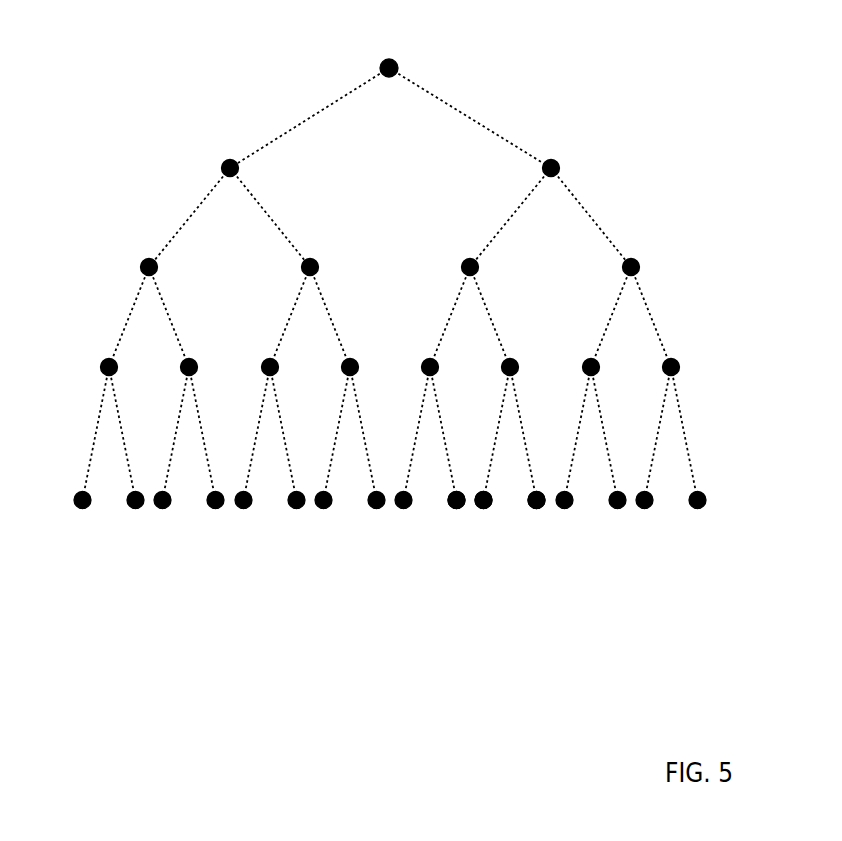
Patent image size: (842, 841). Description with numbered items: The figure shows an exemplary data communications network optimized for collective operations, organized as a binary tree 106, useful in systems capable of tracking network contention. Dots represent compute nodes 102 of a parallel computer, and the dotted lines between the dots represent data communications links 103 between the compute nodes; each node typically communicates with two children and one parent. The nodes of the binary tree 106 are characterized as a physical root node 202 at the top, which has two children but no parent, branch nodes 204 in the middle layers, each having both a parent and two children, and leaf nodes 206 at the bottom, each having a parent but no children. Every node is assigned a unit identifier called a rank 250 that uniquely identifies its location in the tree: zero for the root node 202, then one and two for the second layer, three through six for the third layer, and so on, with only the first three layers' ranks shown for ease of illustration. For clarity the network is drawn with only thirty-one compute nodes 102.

The physical root node 202 is at (415, 55).
The data communications links 103 is at (318, 113).
The rank 250 is at (504, 179).
The branch nodes 204 is at (717, 123).
The leaf nodes 206 is at (717, 533).
The compute nodes 102 is at (452, 508).
The data communications network optimized for collective operations 106 is at (194, 600).